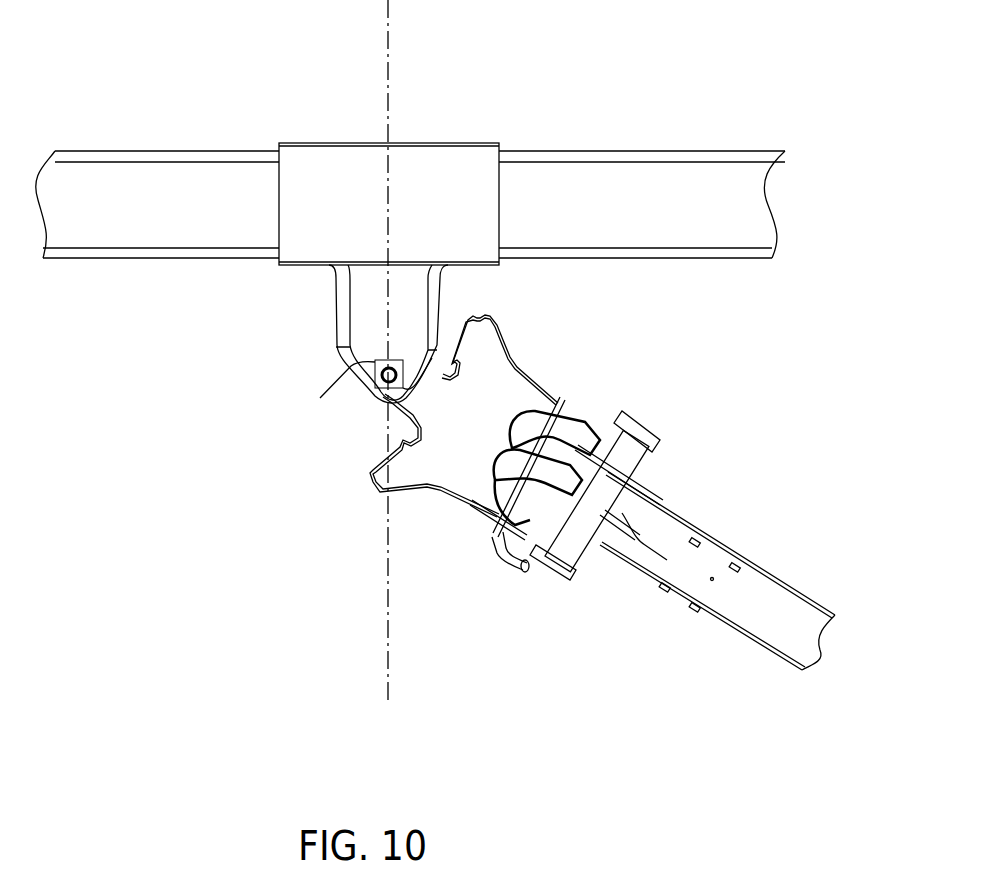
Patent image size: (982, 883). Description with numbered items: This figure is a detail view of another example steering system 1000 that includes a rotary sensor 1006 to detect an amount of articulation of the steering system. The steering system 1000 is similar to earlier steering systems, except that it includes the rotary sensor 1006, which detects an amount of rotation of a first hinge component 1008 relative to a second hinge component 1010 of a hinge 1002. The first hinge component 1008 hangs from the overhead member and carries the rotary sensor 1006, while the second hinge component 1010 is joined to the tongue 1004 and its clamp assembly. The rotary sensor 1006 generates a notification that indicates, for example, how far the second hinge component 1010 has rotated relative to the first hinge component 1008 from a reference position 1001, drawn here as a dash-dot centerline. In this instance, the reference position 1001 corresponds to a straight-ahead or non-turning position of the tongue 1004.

The steering system 1000 is at (273, 65).
The reference position 1001 is at (387, 642).
The hinge 1002 is at (337, 540).
The tongue 1004 is at (763, 570).
The rotary sensor 1006 is at (353, 363).
The first hinge component 1008 is at (337, 310).
The second hinge component 1010 is at (503, 333).